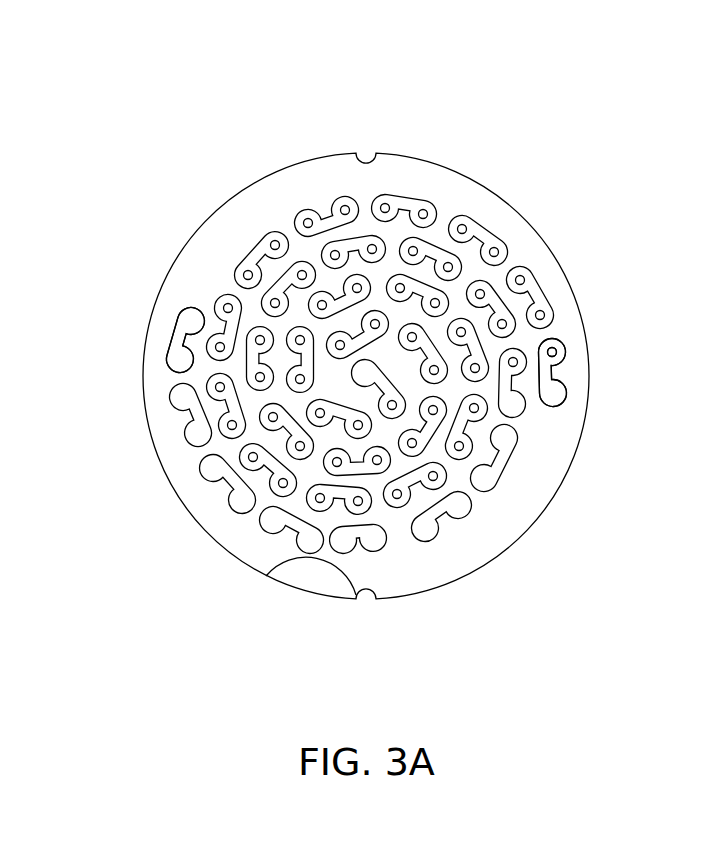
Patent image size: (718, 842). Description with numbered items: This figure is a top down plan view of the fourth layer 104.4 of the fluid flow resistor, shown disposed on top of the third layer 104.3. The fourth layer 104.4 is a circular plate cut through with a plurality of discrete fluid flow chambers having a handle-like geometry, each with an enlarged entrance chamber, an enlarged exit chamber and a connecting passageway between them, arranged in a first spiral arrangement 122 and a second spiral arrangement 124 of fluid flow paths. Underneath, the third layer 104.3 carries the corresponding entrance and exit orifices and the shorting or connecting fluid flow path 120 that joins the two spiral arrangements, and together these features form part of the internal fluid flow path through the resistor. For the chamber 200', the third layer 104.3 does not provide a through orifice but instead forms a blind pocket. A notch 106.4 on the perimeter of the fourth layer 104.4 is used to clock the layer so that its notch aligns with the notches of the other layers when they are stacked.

The fourth layer 104.4 is at (413, 148).
The third layer 104.3 is at (191, 312).
The chamber 200' is at (126, 349).
The connecting fluid flow path 120 is at (548, 396).
The first spiral arrangement of fluid flow paths 122 is at (563, 410).
The second spiral arrangement of fluid flow paths 124 is at (524, 418).
The notch 106.4 is at (268, 578).